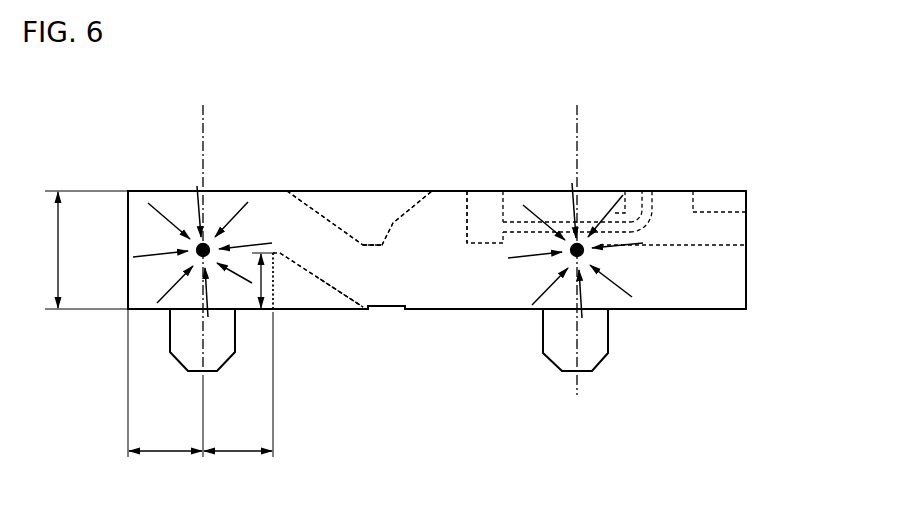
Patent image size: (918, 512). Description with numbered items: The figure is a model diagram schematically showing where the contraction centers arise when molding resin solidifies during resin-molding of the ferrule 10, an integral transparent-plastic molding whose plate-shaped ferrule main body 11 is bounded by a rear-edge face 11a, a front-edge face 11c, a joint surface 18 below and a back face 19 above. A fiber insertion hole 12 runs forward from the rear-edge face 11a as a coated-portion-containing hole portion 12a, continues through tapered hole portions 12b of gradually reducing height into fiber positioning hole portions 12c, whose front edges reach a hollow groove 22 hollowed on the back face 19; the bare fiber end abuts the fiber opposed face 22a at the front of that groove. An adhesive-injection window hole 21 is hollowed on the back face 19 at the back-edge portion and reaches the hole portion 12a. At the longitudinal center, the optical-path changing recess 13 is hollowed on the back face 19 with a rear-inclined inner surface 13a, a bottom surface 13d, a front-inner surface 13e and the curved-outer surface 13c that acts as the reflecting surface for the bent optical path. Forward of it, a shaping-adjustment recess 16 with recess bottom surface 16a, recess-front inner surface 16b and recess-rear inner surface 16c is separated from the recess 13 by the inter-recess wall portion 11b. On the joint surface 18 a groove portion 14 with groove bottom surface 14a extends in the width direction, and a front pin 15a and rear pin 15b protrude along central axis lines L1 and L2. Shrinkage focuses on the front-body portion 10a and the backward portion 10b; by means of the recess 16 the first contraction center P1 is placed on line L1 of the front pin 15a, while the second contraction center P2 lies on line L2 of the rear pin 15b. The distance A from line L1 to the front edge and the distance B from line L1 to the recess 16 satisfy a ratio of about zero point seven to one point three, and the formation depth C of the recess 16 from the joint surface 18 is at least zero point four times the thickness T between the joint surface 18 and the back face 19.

The ferrule 10 is at (714, 139).
The front-body portion 10a is at (167, 197).
The backward portion 10b is at (718, 309).
The ferrule main body 11 is at (746, 191).
The rear-edge face 11a is at (746, 285).
The inter-recess wall portion 11b is at (330, 255).
The front-edge face 11c is at (128, 249).
The fiber insertion hole 12 is at (728, 230).
The coated-portion-containing hole portion 12a is at (728, 220).
The tapered hole portion 12b is at (627, 228).
The fiber positioning hole portion 12c is at (648, 227).
The optical-path changing recess 13 is at (337, 195).
The rear-inclined inner surface 13a is at (417, 196).
The curved-outer surface 13c is at (384, 243).
The bottom surface 13d is at (370, 243).
The front-inner surface 13e is at (320, 214).
The groove portion 14 is at (393, 309).
The groove bottom surface 14a is at (377, 309).
The front pin 15a is at (170, 340).
The rear pin 15b is at (608, 340).
The shaping-adjustment recess 16 is at (298, 305).
The recess bottom surface 16a is at (285, 309).
The recess-front inner surface 16b is at (273, 309).
The recess-rear inner surface 16c is at (331, 291).
The joint surface 18 is at (150, 310).
The back face 19 is at (147, 191).
The adhesive-injection window hole 21 is at (677, 204).
The hollow groove 22 is at (496, 200).
The fiber opposed face 22a is at (468, 212).
The central axis line of the front pin L1 is at (205, 125).
The central axis line of the rear pin L2 is at (581, 125).
The first contraction center P1 is at (208, 243).
The second contraction center P2 is at (585, 256).
The thickness T is at (82, 250).
The distance A is at (165, 393).
The distance B is at (238, 395).
The formation depth C is at (260, 285).